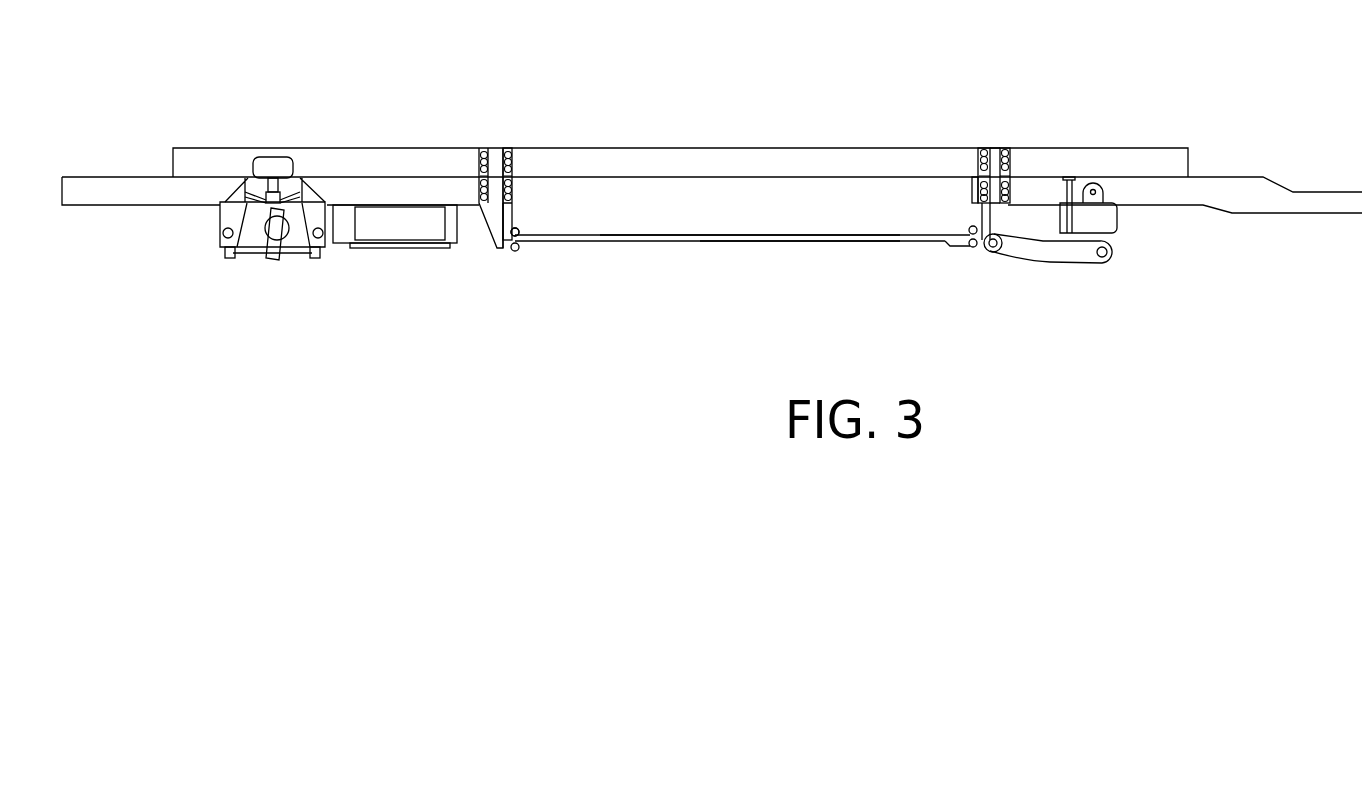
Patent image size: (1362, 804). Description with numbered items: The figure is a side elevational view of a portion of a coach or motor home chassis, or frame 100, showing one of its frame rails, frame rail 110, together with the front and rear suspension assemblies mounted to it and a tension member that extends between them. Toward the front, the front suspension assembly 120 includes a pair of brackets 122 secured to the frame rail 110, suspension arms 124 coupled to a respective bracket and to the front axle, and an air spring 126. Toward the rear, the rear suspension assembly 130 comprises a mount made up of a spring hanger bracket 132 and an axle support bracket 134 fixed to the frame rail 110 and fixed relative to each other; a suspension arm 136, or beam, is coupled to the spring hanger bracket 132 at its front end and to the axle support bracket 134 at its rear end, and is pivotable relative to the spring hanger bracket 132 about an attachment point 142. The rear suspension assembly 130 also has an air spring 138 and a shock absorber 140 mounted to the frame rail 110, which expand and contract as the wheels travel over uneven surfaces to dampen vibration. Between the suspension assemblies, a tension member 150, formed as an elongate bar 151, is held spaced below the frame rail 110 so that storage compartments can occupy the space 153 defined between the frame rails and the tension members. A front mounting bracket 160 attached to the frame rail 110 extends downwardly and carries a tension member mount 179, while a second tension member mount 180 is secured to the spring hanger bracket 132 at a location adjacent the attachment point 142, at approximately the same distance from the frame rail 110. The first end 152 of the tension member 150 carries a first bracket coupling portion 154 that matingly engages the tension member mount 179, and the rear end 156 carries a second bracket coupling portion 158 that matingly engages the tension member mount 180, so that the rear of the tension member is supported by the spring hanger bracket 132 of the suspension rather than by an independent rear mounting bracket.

The frame 100 is at (317, 90).
The frame rail 110 is at (870, 143).
The front suspension assembly 120 is at (252, 220).
The bracket 122 is at (305, 182).
The suspension arm 124 is at (246, 258).
The air spring 126 is at (272, 163).
The rear suspension assembly 130 is at (1095, 225).
The spring hanger bracket 132 is at (997, 146).
The axle support bracket 134 is at (1094, 189).
The suspension arm 136 is at (1047, 268).
The air spring 138 is at (1107, 217).
The shock absorber 140 is at (1073, 178).
The attachment point 142 is at (992, 252).
The tension member 150 is at (674, 247).
The bar 151 is at (805, 243).
The first end 152 is at (520, 252).
The space 153 is at (720, 203).
The first bracket coupling portion 154 is at (521, 231).
The rear end 156 is at (969, 229).
The second bracket coupling portion 158 is at (960, 247).
The front mounting bracket 160 is at (494, 150).
The tension member mount 179 is at (520, 228).
The tension member mount 180 is at (972, 230).